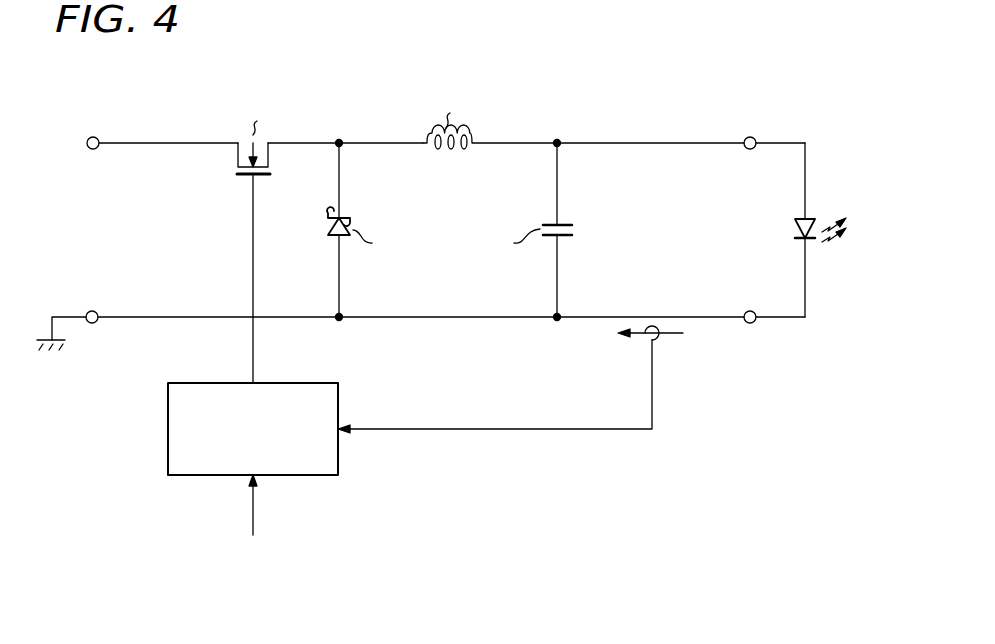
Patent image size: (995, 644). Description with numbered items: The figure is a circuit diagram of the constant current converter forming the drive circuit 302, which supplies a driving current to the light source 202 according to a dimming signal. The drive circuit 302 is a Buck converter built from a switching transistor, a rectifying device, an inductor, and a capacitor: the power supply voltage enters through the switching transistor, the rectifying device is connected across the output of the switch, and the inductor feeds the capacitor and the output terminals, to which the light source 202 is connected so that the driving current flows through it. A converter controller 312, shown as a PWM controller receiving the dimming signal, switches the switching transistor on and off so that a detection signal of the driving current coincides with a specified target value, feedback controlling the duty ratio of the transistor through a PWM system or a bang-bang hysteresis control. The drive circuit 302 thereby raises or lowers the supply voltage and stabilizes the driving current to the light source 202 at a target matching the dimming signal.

The light source 202 is at (816, 211).
The converter controller 312 is at (338, 457).
The drive circuit 302 is at (447, 347).